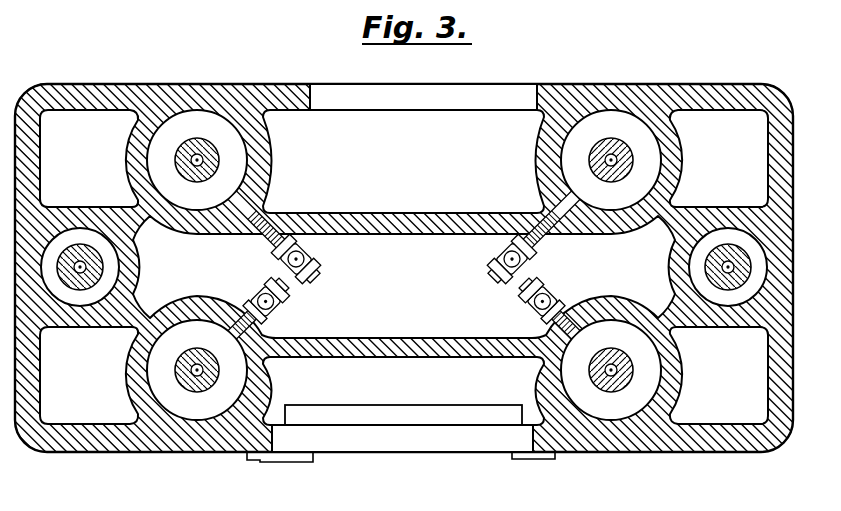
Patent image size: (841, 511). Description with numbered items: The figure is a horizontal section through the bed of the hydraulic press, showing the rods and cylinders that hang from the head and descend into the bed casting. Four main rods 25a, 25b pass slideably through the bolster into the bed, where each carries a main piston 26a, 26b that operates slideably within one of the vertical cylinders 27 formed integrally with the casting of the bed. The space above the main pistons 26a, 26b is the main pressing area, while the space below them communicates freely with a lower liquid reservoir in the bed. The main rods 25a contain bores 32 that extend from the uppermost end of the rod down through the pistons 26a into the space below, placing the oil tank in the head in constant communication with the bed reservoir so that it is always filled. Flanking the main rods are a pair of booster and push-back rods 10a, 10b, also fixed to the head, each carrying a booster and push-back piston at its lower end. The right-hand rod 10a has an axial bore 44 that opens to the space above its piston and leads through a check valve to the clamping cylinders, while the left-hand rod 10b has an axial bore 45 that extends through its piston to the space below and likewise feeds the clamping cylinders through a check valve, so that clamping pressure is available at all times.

The main rod 25a is at (614, 358).
The main rod 25b is at (200, 356).
The main piston 26a is at (653, 163).
The main piston 26b is at (93, 387).
The vertical cylinder 27 is at (274, 155).
The booster and push-back rod 10a is at (712, 254).
The booster and push-back rod 10b is at (70, 243).
The bore 32 is at (617, 160).
The axial bore 44 is at (727, 264).
The axial bore 45 is at (80, 262).